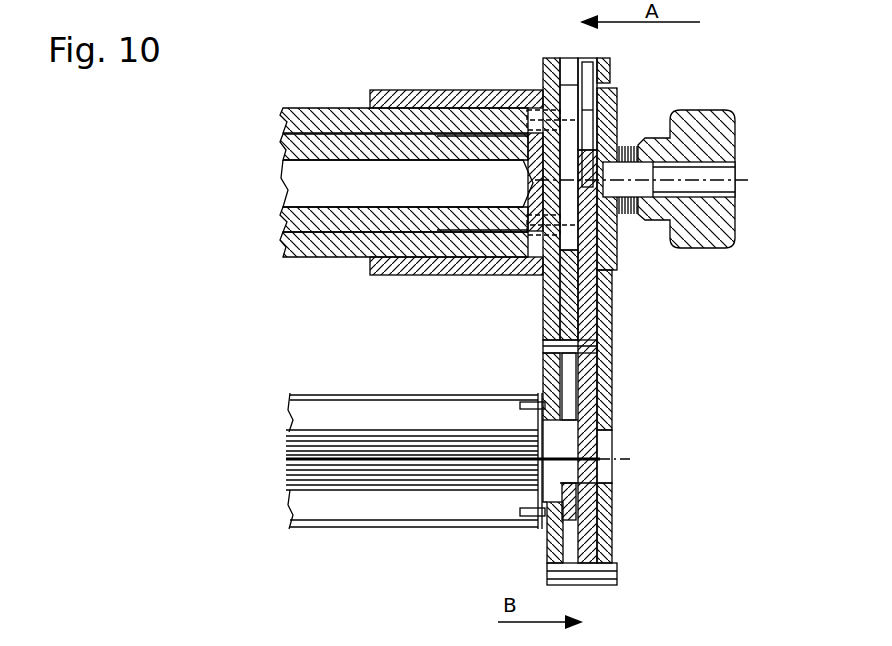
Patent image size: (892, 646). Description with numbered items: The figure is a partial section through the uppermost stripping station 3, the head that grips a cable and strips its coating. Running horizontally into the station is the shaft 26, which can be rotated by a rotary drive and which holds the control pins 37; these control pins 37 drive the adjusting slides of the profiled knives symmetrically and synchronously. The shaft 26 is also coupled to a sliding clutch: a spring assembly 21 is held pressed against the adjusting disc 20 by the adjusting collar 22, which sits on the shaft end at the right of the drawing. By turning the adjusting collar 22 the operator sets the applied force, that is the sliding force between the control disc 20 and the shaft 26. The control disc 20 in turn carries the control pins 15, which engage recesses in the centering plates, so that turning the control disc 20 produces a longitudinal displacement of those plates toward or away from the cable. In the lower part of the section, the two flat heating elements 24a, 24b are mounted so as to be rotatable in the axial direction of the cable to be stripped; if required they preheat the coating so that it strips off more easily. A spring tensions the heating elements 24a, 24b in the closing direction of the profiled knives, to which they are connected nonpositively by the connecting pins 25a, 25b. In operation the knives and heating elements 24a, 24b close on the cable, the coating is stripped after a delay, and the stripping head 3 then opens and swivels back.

The stripping station 3 is at (628, 431).
The control pins 15 is at (608, 70).
The adjusting disc 20 is at (612, 272).
The spring assembly 21 is at (633, 213).
The adjusting collar 22 is at (680, 130).
The flat heating element 24a is at (388, 417).
The flat heating element 24b is at (419, 507).
The connecting pin 25a is at (540, 400).
The connecting pin 25b is at (521, 512).
The shaft 26 is at (300, 213).
The control pins 37 is at (568, 118).